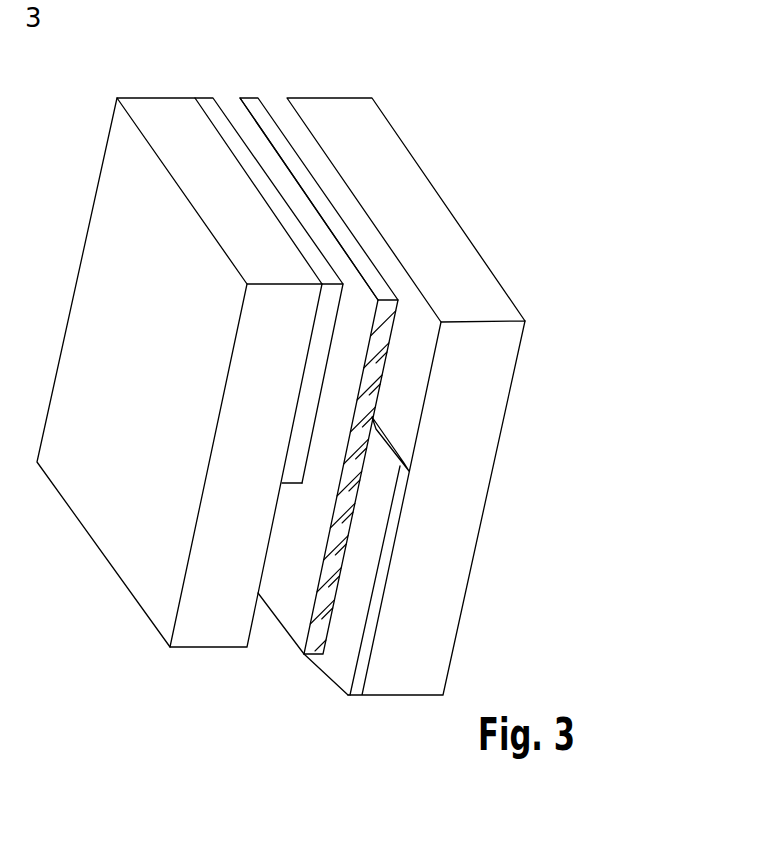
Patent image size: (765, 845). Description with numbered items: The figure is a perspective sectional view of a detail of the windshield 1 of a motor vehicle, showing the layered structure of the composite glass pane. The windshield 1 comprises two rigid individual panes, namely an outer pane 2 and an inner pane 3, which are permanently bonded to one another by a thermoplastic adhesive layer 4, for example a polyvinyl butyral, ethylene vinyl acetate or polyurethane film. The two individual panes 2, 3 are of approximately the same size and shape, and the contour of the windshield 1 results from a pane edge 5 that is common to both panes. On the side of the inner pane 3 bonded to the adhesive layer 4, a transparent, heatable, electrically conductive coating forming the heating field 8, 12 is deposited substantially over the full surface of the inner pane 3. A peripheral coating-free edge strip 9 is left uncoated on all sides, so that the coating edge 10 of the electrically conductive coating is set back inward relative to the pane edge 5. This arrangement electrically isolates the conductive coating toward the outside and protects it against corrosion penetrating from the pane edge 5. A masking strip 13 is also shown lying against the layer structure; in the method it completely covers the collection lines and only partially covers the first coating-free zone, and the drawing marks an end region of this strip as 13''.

The windshield 1 is at (430, 94).
The outer pane 2 is at (113, 362).
The inner pane 3 is at (447, 562).
The adhesive layer 4 is at (288, 607).
The pane edge 5 is at (409, 186).
The hatched intermediate layer 8, 12 is at (342, 649).
The peripheral coating-free edge strip 9 is at (412, 367).
The coating edge 10 is at (390, 444).
The masking strip 13 is at (189, 290).
The end of thin layer 13'' is at (195, 563).